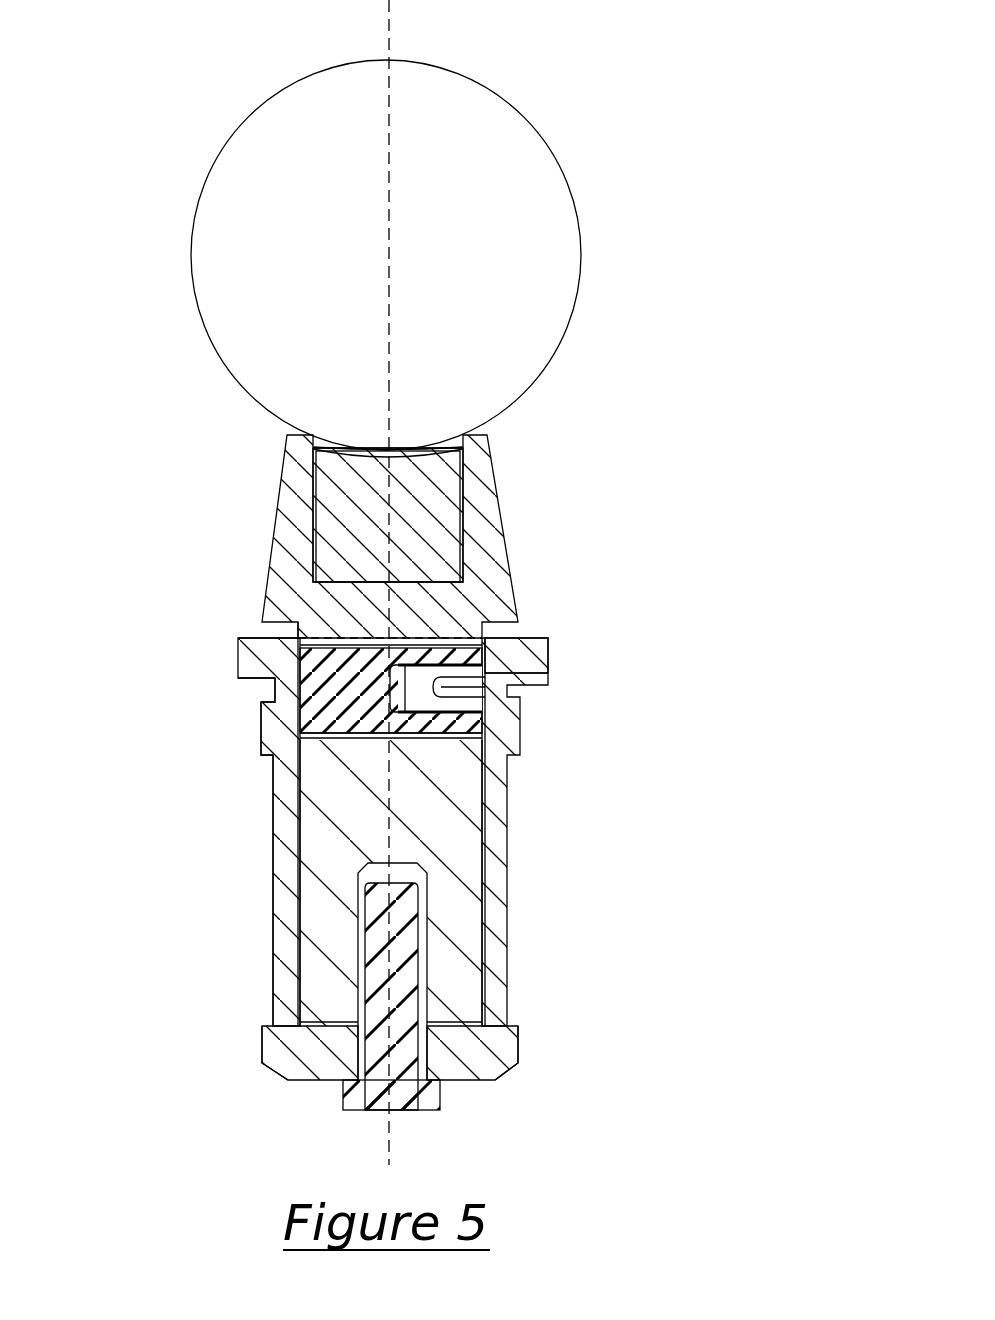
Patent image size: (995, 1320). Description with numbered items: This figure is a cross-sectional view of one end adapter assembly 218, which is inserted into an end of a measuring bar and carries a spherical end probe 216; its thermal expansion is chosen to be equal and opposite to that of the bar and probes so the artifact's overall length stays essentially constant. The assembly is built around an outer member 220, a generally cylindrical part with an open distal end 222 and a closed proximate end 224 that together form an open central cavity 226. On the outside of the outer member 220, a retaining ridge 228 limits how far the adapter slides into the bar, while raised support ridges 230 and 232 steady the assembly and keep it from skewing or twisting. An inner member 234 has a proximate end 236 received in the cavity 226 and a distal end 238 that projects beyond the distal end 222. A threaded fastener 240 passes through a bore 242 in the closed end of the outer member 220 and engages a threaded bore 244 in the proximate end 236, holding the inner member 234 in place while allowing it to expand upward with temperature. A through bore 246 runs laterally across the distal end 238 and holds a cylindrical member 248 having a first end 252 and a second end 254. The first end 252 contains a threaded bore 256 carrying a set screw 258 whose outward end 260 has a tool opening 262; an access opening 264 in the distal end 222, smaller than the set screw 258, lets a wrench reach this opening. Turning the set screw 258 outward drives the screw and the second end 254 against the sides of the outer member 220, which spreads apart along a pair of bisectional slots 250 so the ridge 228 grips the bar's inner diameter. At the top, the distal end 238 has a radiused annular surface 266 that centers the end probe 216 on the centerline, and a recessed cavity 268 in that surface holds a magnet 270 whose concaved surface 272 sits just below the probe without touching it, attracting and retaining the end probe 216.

The end probe 216 is at (560, 277).
The end adapter assembly 218 is at (208, 553).
The outer member 220 is at (507, 855).
The open distal end 222 is at (255, 675).
The closed proximate end 224 is at (518, 1050).
The central cavity 226 is at (300, 963).
The retaining ridge 228 is at (262, 692).
The raised support ridge 230 is at (262, 1040).
The raised support ridge 232 is at (270, 718).
The inner member 234 is at (320, 915).
The proximate end of inner member 236 is at (470, 1002).
The distal end of inner member 238 is at (498, 470).
The threaded fastener 240 is at (440, 1097).
The bore 242 is at (287, 1068).
The threaded bore 244 is at (426, 932).
The through bore 246 is at (312, 657).
The cylindrical member 248 is at (400, 815).
The bisectional slot 250 is at (484, 832).
The first end of cylindrical member 252 is at (480, 738).
The second end of cylindrical member 254 is at (300, 740).
The threaded bore 256 is at (465, 690).
The set screw 258 is at (455, 640).
The outward end 260 is at (455, 686).
The tool opening 262 is at (470, 727).
The access opening 264 is at (500, 678).
The radiused annular surface 266 is at (470, 448).
The recessed cavity 268 is at (452, 553).
The magnet 270 is at (334, 499).
The concaved surface 272 is at (340, 437).